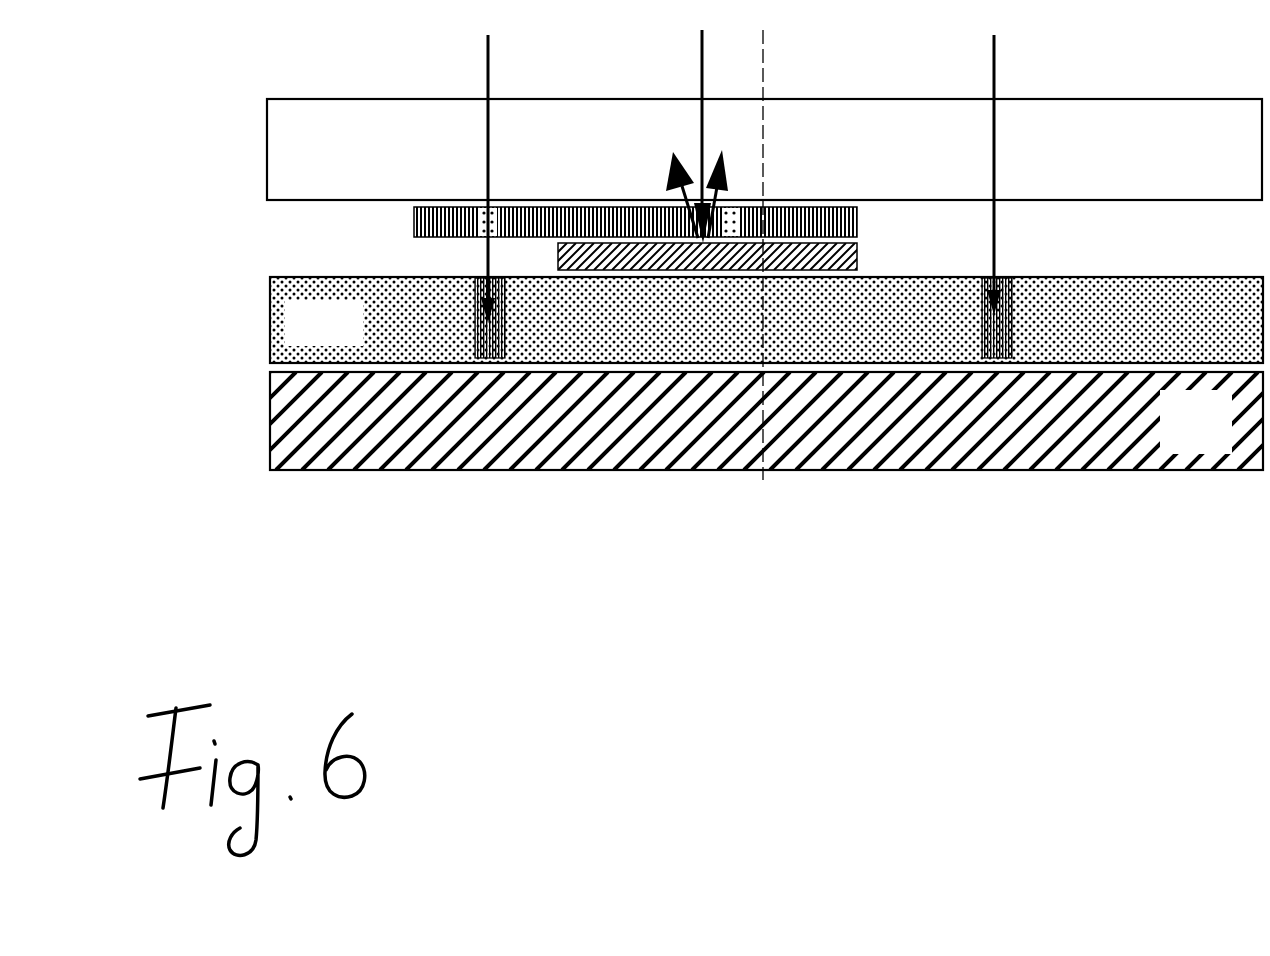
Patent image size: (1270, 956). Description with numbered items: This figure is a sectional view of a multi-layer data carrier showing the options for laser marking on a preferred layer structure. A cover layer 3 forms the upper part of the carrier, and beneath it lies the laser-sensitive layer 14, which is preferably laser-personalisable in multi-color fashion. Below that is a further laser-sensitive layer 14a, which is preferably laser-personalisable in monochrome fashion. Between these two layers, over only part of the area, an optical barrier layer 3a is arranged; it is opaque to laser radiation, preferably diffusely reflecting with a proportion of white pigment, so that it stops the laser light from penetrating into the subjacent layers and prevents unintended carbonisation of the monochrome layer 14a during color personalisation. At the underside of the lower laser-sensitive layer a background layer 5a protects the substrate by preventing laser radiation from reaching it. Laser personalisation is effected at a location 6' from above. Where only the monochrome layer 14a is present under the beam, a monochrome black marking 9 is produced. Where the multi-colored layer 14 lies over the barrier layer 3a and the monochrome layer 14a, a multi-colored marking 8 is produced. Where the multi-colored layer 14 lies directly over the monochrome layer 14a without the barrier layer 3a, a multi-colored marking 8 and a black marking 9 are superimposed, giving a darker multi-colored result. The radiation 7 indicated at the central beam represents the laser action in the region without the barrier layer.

The cover layer 3 is at (764, 149).
The optical barrier layer 3a is at (857, 253).
The background layer 5a is at (721, 421).
The location of laser personalisation 6' is at (741, 250).
The scattered radiation 7 is at (720, 160).
The multi-colored marking 8 is at (497, 206).
The monochrome black marking 9 is at (470, 317).
The multi-colored laser-personalisable layer 14 is at (414, 220).
The monochrome laser-personalisable layer 14a is at (766, 320).